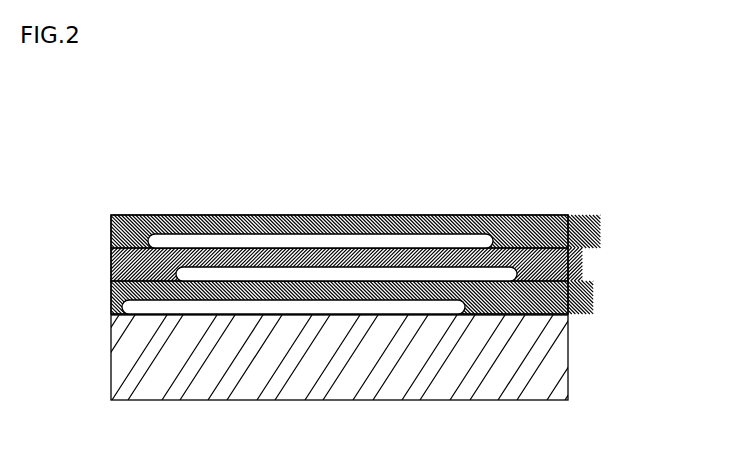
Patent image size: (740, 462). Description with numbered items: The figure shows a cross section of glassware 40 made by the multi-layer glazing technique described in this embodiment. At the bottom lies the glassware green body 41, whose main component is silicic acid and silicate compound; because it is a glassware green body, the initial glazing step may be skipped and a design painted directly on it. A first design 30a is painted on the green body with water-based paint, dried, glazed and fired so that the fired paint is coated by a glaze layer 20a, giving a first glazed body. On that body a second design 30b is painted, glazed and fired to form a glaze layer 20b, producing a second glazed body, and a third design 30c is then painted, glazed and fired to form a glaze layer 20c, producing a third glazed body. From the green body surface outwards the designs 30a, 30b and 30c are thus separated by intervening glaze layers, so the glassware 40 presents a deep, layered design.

The glassware 40 is at (145, 192).
The glaze layer 20a is at (568, 289).
The glaze layer 20b is at (568, 257).
The glaze layer 20c is at (568, 225).
The first design 30a is at (265, 307).
The second design 30b is at (302, 275).
The third design 30c is at (333, 238).
The glassware green body 41 is at (552, 355).